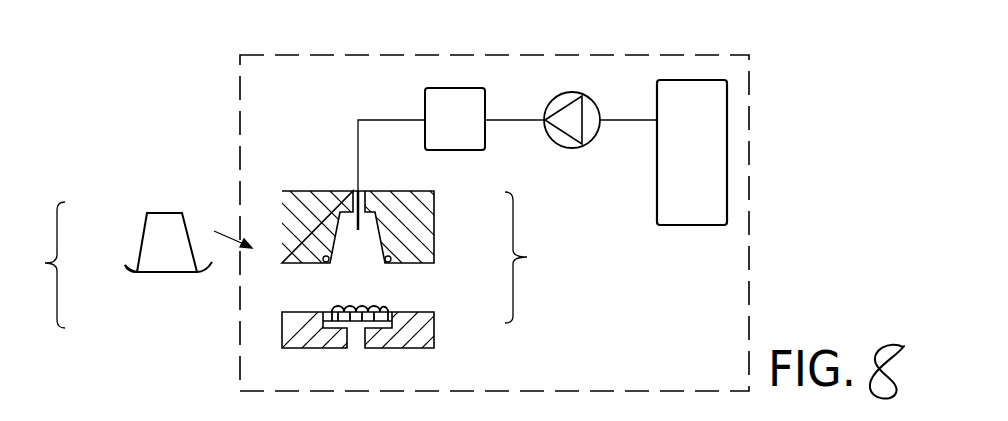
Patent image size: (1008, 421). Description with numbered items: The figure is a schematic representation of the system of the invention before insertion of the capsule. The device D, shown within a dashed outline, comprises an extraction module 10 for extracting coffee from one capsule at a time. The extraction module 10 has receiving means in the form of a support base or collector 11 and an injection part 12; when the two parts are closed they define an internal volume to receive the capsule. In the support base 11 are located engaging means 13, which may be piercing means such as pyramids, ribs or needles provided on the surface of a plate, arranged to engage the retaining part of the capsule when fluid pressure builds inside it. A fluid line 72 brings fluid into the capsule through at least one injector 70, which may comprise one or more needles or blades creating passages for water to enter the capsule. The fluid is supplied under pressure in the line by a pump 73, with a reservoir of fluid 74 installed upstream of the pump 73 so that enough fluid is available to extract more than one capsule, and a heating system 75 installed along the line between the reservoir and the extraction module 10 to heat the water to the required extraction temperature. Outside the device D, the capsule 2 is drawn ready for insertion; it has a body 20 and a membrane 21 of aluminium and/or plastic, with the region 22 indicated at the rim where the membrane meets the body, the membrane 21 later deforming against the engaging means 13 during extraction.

The capsule 2 is at (118, 265).
The body 20 is at (141, 233).
The membrane 21 is at (147, 274).
The sample edge 22 is at (130, 268).
The extraction module 10 is at (397, 257).
The support base 11 is at (434, 340).
The injection part 12 is at (432, 191).
The engaging means 13 is at (392, 310).
The injector 70 is at (365, 191).
The fluid line 72 is at (387, 119).
The pump 73 is at (572, 92).
The reservoir of fluid 74 is at (727, 200).
The heating system 75 is at (454, 88).
The device D is at (749, 143).